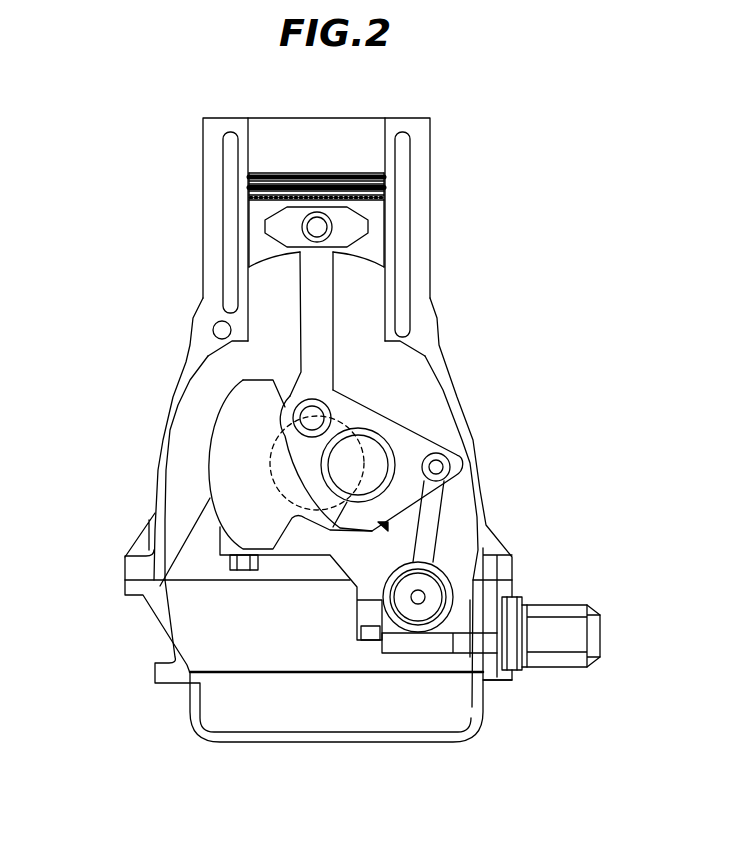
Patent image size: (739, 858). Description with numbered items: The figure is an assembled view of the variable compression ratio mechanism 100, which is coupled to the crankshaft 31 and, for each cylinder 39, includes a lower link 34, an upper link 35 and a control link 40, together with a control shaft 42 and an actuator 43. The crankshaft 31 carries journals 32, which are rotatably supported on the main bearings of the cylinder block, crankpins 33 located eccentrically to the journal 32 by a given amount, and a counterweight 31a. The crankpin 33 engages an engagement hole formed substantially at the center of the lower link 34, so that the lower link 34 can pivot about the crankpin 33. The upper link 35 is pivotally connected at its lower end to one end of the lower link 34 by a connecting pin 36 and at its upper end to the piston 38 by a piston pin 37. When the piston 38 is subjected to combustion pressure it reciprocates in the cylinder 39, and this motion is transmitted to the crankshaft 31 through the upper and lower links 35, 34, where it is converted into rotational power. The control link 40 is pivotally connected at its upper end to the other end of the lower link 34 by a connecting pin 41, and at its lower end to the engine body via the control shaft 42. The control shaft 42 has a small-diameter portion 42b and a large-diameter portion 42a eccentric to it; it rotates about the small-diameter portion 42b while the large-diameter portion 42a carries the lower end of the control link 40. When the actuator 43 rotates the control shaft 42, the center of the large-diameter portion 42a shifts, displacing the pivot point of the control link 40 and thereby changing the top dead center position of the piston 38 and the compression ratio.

The variable compression ratio mechanism 100 is at (558, 183).
The crankshaft 31 is at (197, 482).
The counterweight 31a is at (243, 408).
The journal 32 is at (267, 490).
The crankpin 33 is at (375, 460).
The lower link 34 is at (360, 416).
The upper link 35 is at (320, 283).
The connecting pin 36 is at (312, 418).
The piston pin 37 is at (317, 228).
The piston 38 is at (365, 171).
The cylinder 39 is at (381, 300).
The control link 40 is at (430, 524).
The connecting pin 41 is at (441, 454).
The control shaft 42 is at (417, 602).
The large-diameter portion 42a is at (460, 598).
The small-diameter portion 42b is at (428, 612).
The actuator 43 is at (567, 605).